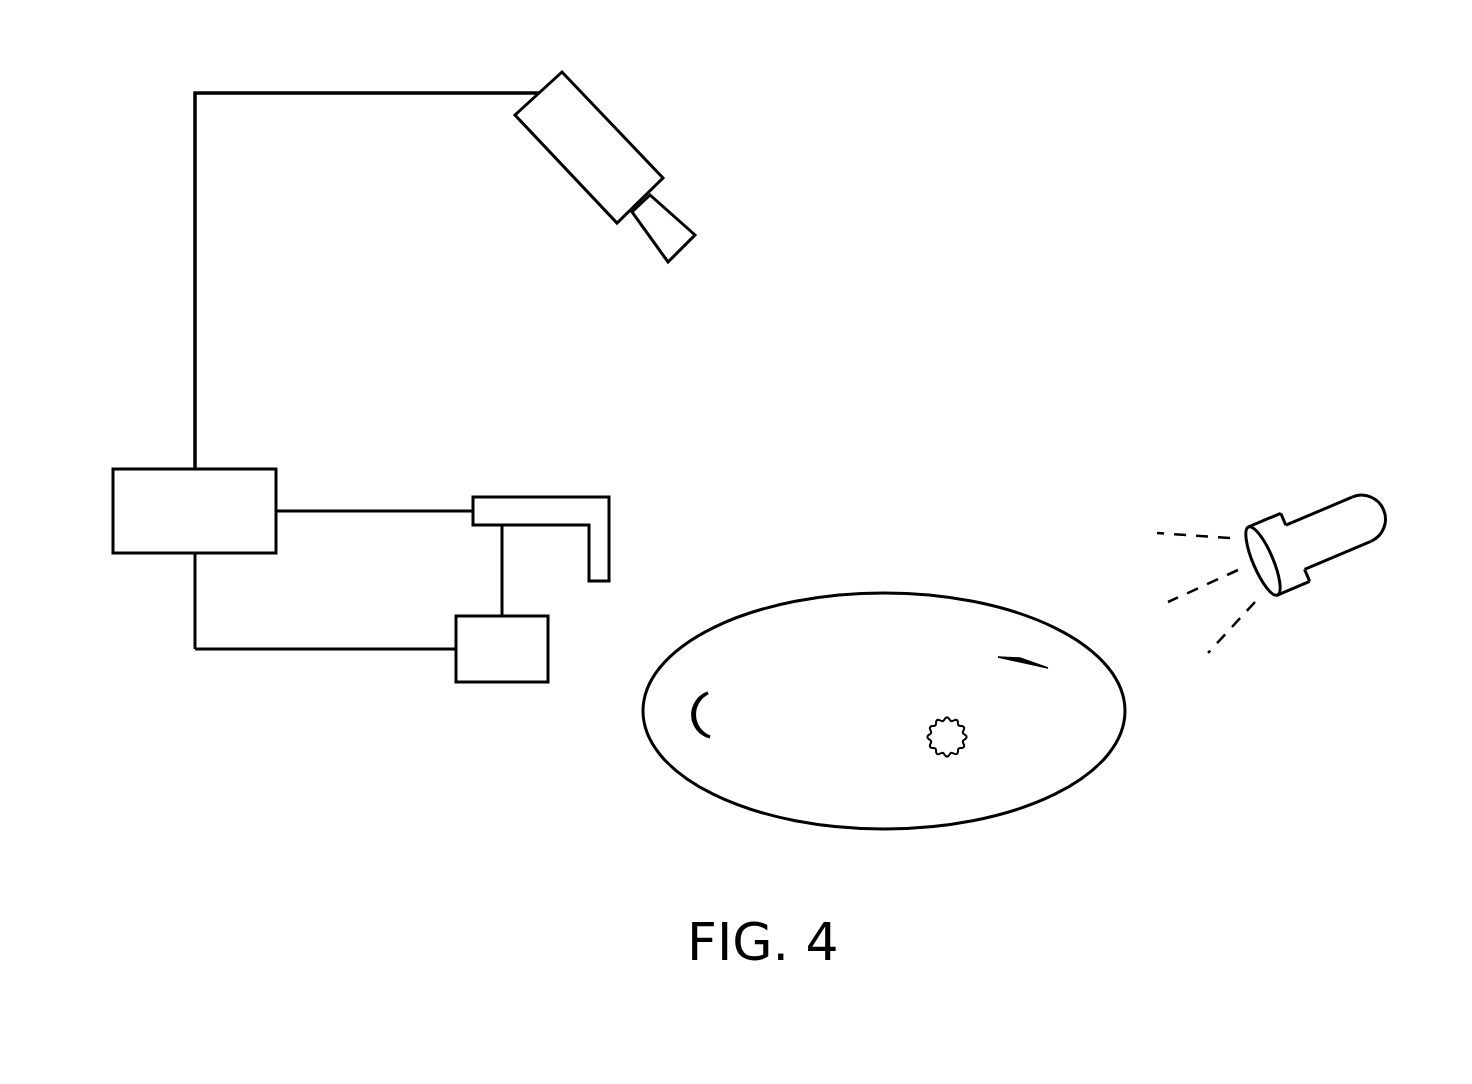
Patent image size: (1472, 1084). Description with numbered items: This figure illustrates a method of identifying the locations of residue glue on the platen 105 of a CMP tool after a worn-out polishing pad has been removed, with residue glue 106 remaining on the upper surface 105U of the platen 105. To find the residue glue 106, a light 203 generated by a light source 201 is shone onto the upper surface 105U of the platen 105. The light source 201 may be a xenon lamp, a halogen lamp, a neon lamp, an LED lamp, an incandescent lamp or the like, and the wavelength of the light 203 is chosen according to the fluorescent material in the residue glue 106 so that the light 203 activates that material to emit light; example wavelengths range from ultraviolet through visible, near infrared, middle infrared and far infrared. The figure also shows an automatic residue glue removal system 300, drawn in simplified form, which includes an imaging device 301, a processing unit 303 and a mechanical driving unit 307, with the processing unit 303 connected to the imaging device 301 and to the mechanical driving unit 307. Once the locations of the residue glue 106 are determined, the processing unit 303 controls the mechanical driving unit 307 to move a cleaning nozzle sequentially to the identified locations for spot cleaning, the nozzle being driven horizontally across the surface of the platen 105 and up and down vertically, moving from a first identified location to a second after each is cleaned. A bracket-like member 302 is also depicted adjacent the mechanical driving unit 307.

The automatic residue glue removal system 300 is at (326, 82).
The imaging device 301 is at (615, 127).
The robotic arm 302 is at (542, 497).
The processing unit 303 is at (218, 528).
The mechanical driving unit 307 is at (500, 683).
The platen 105 is at (1052, 797).
The upper surface 105U is at (882, 632).
The residue glue 106 is at (677, 714).
The light source 201 is at (1363, 497).
The light 203 is at (1185, 535).